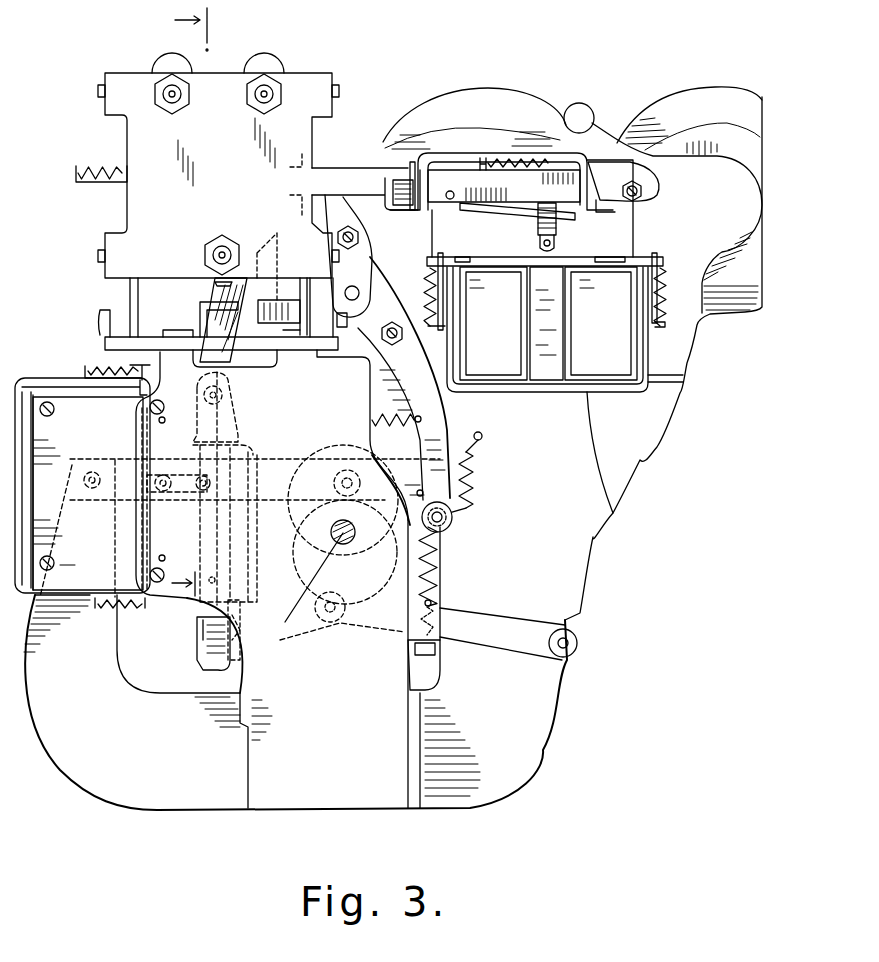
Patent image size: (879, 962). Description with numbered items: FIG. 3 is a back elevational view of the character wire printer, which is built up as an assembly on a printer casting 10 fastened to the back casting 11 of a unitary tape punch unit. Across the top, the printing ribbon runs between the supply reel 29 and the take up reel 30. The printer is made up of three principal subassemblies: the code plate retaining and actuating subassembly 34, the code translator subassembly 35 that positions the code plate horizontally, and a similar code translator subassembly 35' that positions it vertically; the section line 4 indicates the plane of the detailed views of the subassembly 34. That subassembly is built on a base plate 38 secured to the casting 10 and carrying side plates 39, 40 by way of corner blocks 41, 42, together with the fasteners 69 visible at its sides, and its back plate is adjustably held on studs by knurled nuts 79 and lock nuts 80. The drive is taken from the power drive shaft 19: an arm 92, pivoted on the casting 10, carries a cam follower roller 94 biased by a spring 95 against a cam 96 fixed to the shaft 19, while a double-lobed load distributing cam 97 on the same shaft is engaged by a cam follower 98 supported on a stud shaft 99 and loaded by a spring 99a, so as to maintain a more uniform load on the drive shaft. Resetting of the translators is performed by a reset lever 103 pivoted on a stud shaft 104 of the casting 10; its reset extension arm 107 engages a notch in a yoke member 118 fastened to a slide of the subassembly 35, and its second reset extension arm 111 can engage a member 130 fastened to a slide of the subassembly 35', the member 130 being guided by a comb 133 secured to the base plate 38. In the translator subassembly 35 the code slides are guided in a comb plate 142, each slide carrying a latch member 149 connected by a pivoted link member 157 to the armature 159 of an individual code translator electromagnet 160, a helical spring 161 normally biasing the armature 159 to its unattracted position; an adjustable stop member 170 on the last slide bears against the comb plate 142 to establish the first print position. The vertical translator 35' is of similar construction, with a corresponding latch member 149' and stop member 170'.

The section line 4- 4 is at (182, 302).
The printer casting 10 is at (93, 780).
The back casting 11 is at (640, 448).
The power drive shaft 19 is at (312, 577).
The supply reel 29 is at (690, 97).
The take up reel 30 is at (480, 95).
The code plate retaining and actuating subassembly 34 is at (247, 66).
The code translator subassembly 35 is at (564, 208).
The code translator subassembly 35' is at (89, 507).
The base plate 38 is at (300, 340).
The side plate 39 is at (132, 291).
The side plate 40 is at (303, 290).
The corner block 41 is at (108, 337).
The corner block 42 is at (552, 150).
The set screw 69 is at (100, 256).
The knurled nuts 79 is at (272, 70).
The lock nuts 80 is at (225, 246).
The arm 92 is at (284, 462).
The cam follower roller 94 is at (345, 468).
The spring 95 is at (428, 603).
The cam 96 is at (318, 553).
The double-lobed load distributing cam 97 is at (298, 548).
The cam follower 98 is at (478, 618).
The stud shaft 99 is at (570, 648).
The spring 99a is at (469, 482).
The reset lever 103 is at (440, 428).
The stud shaft 104 is at (359, 290).
The reset extension arm 107 is at (365, 245).
The reset extension arm 111 is at (280, 268).
The yoke member 118 is at (340, 175).
The member 130 is at (228, 352).
The comb 133 is at (198, 305).
The comb plate 142 is at (252, 612).
The latch member 149 is at (504, 200).
The latch bar 149' is at (177, 504).
The pivoted link member 157 is at (538, 226).
The armature 159 is at (606, 262).
The code translator electromagnet 160 is at (508, 368).
The helical spring 161 is at (678, 278).
The adjustable stop member 170 is at (638, 187).
The cam latch 170' is at (244, 407).